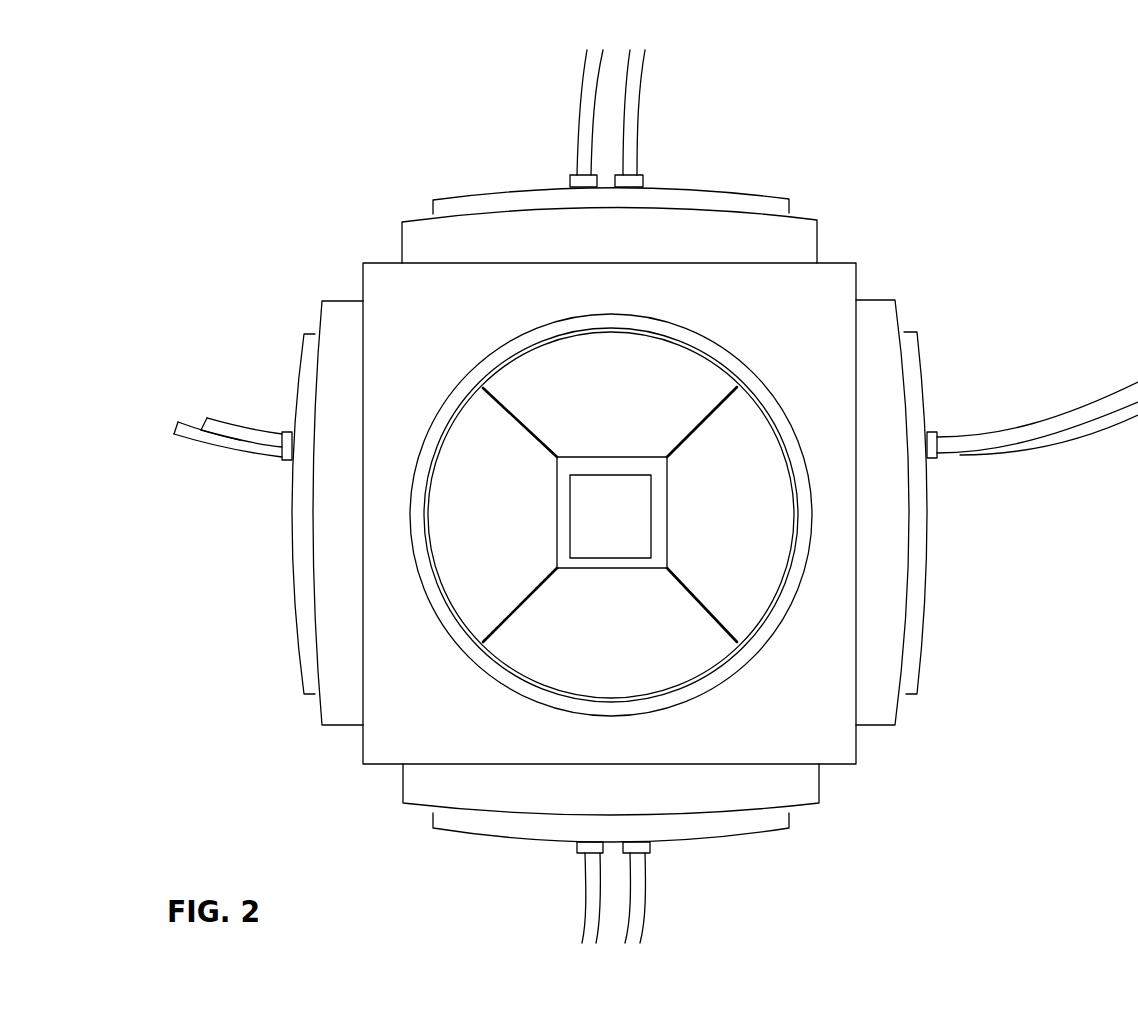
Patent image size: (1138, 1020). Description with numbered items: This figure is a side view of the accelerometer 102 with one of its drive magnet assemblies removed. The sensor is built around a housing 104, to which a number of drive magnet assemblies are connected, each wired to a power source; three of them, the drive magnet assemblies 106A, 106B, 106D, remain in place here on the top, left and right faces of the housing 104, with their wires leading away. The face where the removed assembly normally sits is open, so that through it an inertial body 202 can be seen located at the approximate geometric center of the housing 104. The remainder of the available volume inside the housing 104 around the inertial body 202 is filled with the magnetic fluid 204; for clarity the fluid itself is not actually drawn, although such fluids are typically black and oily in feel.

The accelerometer 102 is at (195, 118).
The housing 104 is at (840, 262).
The drive magnet assembly 106A is at (757, 193).
The drive magnet assembly 106B is at (315, 548).
The drive magnet assembly 106D is at (885, 298).
The inertial body 202 is at (632, 513).
The magnetic fluid 204 is at (600, 462).